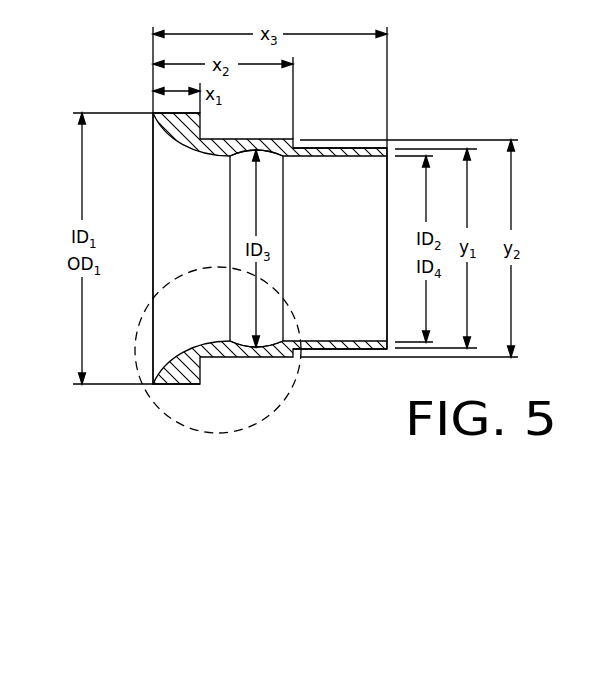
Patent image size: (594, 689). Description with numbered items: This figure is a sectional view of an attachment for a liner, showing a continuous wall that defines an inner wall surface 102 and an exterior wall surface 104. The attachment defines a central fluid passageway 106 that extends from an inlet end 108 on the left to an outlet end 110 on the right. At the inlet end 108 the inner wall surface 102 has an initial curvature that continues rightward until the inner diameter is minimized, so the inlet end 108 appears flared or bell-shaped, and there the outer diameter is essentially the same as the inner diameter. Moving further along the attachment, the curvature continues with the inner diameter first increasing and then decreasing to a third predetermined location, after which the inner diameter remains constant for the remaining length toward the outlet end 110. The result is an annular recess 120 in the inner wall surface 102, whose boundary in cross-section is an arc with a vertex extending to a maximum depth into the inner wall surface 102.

The inner wall surface 102 is at (335, 157).
The exterior wall surface 104 is at (362, 148).
The central fluid passageway 106 is at (398, 203).
The inlet end 108 is at (156, 383).
The outlet end 110 is at (395, 344).
The annular recess 120 is at (263, 339).